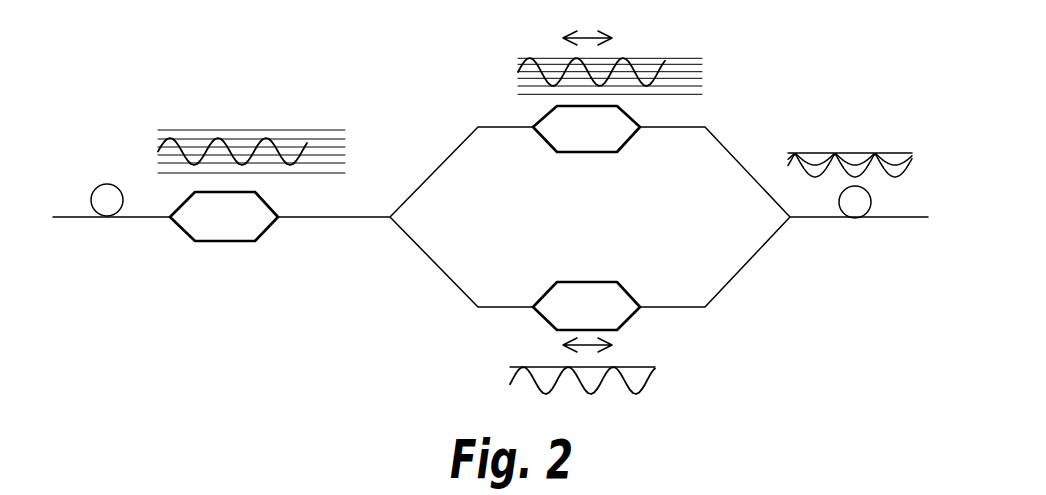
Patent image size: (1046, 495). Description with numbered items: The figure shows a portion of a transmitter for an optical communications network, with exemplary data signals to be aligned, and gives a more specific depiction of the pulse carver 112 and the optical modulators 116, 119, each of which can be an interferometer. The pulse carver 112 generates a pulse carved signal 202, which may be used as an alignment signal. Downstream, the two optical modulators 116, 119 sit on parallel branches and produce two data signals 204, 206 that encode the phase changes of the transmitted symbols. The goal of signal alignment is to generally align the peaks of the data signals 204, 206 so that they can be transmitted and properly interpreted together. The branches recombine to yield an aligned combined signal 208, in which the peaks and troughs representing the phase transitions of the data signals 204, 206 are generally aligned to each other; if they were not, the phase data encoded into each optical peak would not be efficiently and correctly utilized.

The pulse carver 112 is at (209, 286).
The optical modulator 116 is at (568, 196).
The optical modulator 119 is at (566, 274).
The pulse carved signal 202 is at (194, 116).
The data signal 204 is at (459, 76).
The data signal 206 is at (438, 392).
The combined signal 208 is at (828, 134).